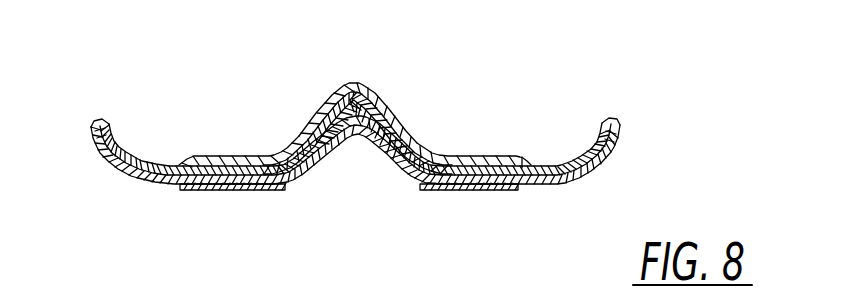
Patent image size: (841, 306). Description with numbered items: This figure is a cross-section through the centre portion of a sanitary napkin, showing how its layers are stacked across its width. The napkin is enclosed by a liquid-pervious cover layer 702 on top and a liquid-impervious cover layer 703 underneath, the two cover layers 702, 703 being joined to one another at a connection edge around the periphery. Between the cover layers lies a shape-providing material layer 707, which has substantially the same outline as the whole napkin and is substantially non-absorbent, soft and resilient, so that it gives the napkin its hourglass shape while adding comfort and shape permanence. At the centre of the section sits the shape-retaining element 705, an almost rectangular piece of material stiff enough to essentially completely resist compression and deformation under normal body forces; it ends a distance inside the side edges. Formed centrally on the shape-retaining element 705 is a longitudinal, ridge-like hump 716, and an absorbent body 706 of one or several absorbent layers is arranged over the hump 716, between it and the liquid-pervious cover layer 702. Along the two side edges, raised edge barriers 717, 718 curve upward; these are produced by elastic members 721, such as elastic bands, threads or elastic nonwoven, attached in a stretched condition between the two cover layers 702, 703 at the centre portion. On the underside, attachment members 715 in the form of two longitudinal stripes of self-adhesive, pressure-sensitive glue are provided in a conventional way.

The liquid-pervious cover layer 702 is at (475, 158).
The liquid-impervious cover layer 703 is at (582, 177).
The shape-retaining element 705 is at (225, 167).
The absorbent body 706 is at (363, 97).
The shape-providing material layer 707 is at (312, 177).
The attachment members 715 is at (222, 190).
The hump 716 is at (350, 82).
The raised edge barrier 717 is at (112, 126).
The raised edge barrier 718 is at (621, 130).
The elastic members 721 is at (97, 148).